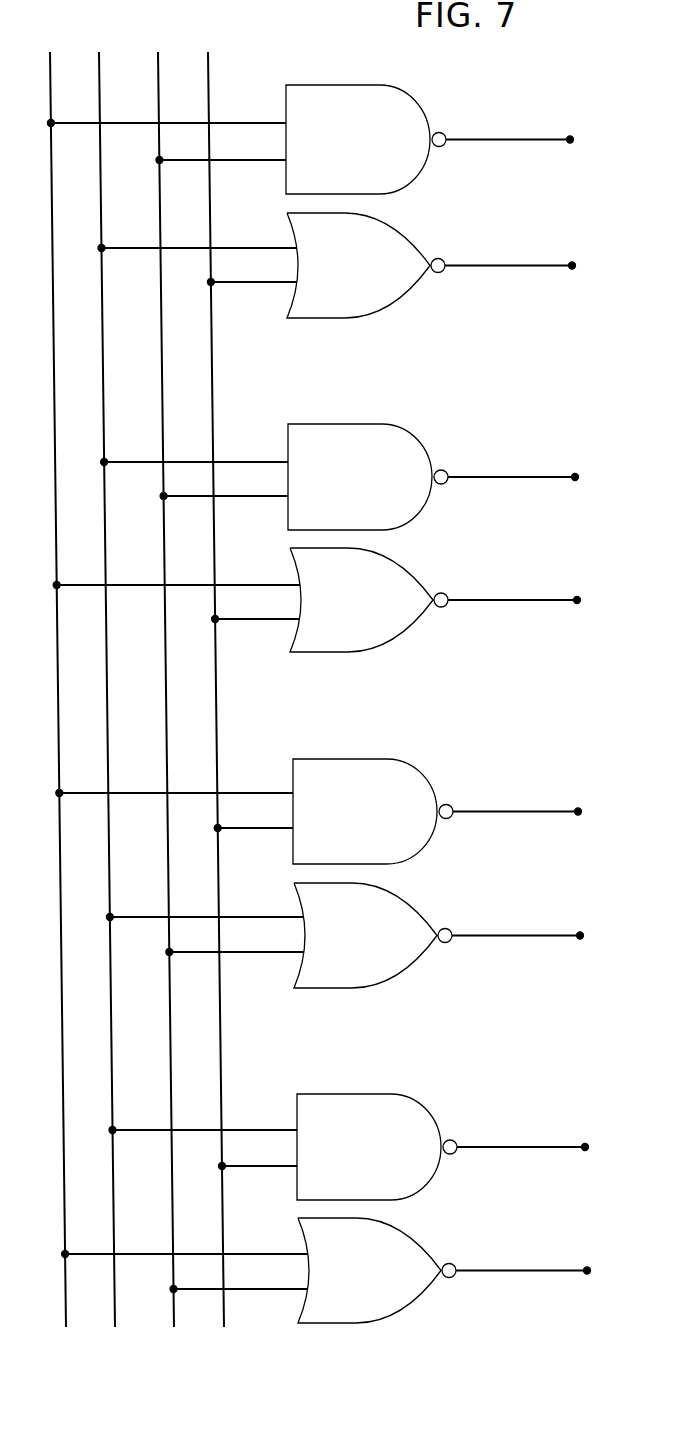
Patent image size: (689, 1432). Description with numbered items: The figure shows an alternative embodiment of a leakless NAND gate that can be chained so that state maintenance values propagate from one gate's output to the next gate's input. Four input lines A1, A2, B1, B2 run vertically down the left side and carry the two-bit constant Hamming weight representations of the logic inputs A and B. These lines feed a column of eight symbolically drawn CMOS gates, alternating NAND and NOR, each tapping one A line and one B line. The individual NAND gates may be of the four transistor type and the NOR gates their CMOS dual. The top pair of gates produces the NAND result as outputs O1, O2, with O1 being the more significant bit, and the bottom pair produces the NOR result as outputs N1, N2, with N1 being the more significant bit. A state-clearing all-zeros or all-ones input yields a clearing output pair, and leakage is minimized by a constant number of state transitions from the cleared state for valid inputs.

The input A1 is at (54, 672).
The input A2 is at (102, 672).
The input B1 is at (162, 672).
The input B2 is at (211, 672).
The output O1 is at (531, 141).
The output O2 is at (530, 267).
The output N1 is at (542, 1149).
The output N2 is at (542, 1273).